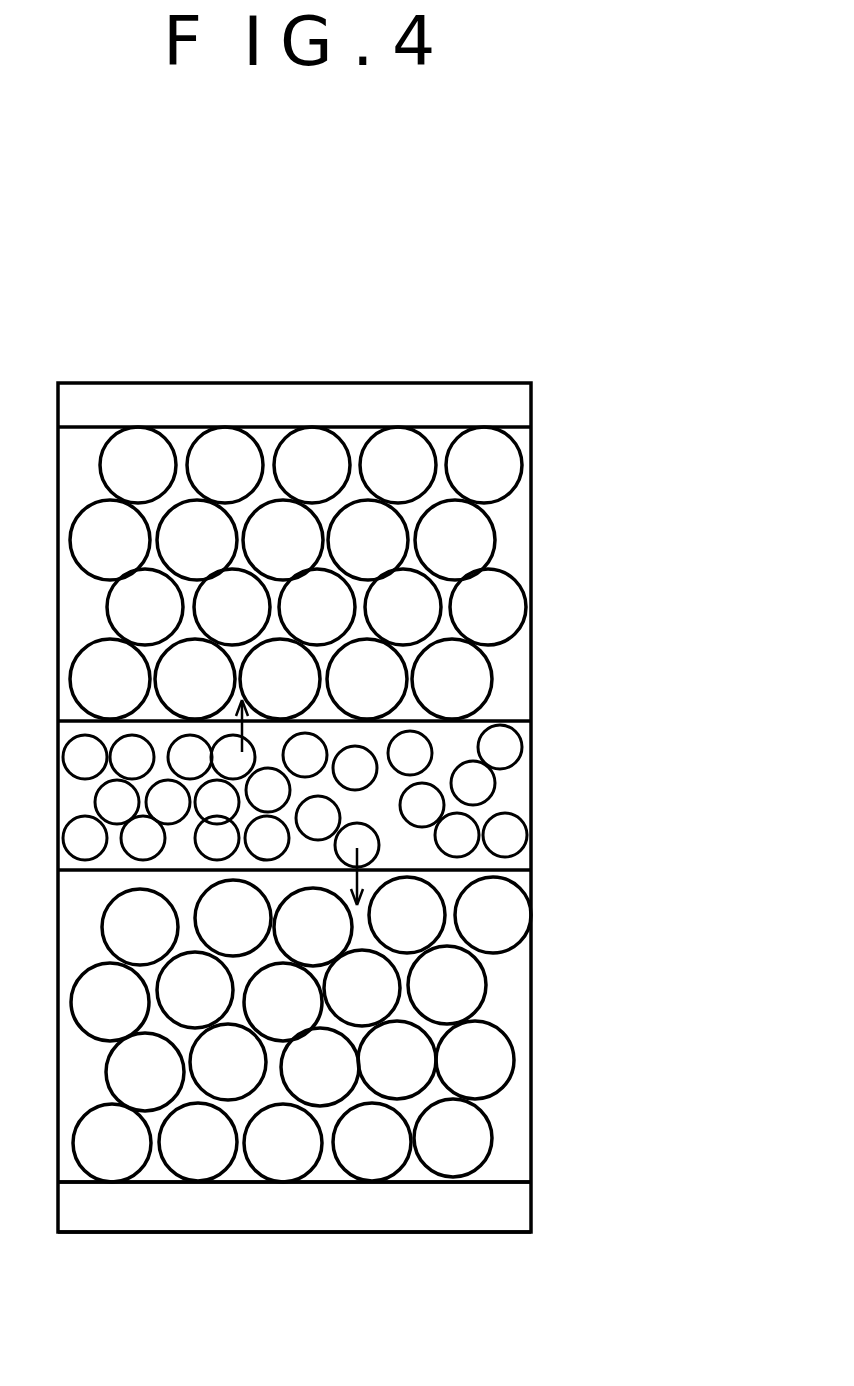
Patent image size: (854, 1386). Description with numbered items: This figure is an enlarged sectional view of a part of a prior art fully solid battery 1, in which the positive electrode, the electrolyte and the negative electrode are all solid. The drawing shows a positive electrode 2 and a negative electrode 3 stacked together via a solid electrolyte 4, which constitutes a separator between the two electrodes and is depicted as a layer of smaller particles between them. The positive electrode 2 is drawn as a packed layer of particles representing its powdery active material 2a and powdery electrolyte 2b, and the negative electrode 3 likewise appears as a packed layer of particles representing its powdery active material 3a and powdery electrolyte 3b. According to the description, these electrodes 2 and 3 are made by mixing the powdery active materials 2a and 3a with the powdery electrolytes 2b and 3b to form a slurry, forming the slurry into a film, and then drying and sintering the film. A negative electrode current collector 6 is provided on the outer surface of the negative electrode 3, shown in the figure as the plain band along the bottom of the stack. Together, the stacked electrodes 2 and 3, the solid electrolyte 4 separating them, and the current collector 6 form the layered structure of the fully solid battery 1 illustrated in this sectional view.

The fully solid battery 1 is at (552, 285).
The positive electrode 2 is at (405, 574).
The powdery active material of the positive electrode 2a is at (498, 470).
The powdery electrolyte of the positive electrode 2b is at (553, 541).
The negative electrode 3 is at (406, 1029).
The powdery active material of the negative electrode 3a is at (500, 922).
The powdery electrolyte of the negative electrode 3b is at (552, 987).
The solid electrolyte 4 is at (515, 790).
The negative electrode current collector 6 is at (418, 1222).